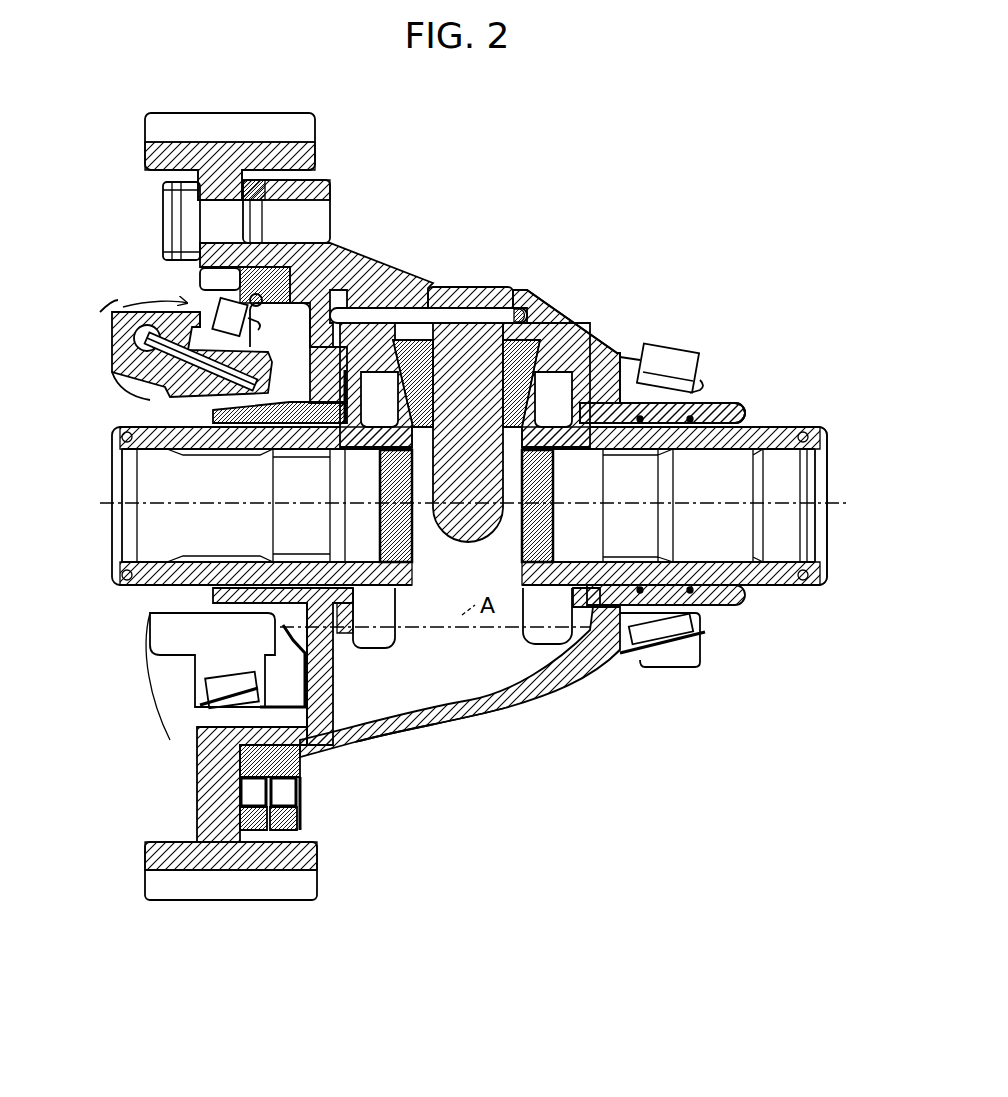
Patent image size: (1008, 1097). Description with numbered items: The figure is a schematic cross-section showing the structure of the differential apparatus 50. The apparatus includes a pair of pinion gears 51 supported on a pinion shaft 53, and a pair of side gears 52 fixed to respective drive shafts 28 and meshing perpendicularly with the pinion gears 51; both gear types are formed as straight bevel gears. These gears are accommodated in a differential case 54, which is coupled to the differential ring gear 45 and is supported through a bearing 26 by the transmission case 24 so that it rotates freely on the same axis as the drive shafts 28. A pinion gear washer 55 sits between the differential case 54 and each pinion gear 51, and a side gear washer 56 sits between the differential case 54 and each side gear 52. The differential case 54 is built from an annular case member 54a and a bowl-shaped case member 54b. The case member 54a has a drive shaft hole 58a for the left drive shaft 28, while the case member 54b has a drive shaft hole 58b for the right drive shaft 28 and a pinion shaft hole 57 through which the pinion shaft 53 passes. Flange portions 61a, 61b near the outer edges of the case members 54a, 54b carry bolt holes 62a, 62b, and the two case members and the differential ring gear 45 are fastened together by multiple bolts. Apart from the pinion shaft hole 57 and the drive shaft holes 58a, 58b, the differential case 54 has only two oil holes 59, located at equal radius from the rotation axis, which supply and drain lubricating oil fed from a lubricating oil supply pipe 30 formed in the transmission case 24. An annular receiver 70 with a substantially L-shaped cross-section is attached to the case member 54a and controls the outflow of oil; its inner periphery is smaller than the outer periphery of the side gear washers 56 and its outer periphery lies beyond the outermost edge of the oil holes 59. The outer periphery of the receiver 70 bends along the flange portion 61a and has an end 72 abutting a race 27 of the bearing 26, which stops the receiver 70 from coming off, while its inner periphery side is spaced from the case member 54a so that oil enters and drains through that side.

The transmission case 24 is at (110, 355).
The bearing 26 is at (117, 310).
The race 27 is at (217, 290).
The drive shaft 28 is at (100, 503).
The lubricating oil supply pipe 30 is at (112, 370).
The differential ring gear 45 is at (148, 150).
The differential apparatus 50 is at (730, 310).
The pinion gear 51 is at (480, 423).
The side gear 52 is at (655, 395).
The pinion shaft 53 is at (540, 417).
The differential case 54 is at (490, 795).
The annular case member 54a is at (318, 685).
The bowl-shaped case member 54b is at (423, 728).
The pinion gear washer 55 is at (388, 347).
The side gear washer 56 is at (600, 413).
The pinion shaft hole 57 is at (470, 283).
The drive shaft hole 58a is at (187, 597).
The drive shaft hole 58b is at (767, 415).
The oil hole 59 is at (347, 347).
The flange portion 61a is at (250, 827).
The flange portion 61b is at (288, 830).
The bolt hole 62a is at (243, 787).
The bolt hole 62b is at (304, 788).
The receiver 70 is at (318, 347).
The end 72 is at (258, 283).